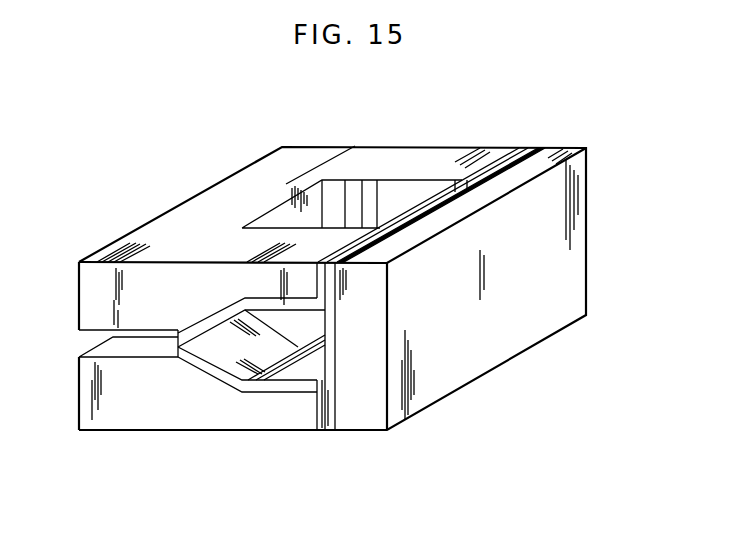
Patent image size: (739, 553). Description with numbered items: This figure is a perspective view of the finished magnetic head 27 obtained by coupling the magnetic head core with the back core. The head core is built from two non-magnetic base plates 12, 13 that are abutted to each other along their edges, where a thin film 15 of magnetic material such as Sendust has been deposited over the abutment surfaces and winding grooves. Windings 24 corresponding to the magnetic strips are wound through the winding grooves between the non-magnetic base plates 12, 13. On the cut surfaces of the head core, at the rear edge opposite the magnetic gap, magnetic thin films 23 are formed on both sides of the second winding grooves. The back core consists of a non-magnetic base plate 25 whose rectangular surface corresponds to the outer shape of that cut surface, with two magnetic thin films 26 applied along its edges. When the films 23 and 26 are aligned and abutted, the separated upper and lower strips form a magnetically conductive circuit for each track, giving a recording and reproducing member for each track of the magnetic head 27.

The non-magnetic base plate 12 is at (90, 288).
The non-magnetic base plate 13 is at (115, 417).
The thin film of magnetic material 15 is at (203, 323).
The magnetic thin film 23 is at (513, 146).
The winding 24 is at (383, 147).
The non-magnetic base plate 25 is at (572, 291).
The magnetic thin film 26 is at (537, 147).
The magnetic head 27 is at (432, 412).